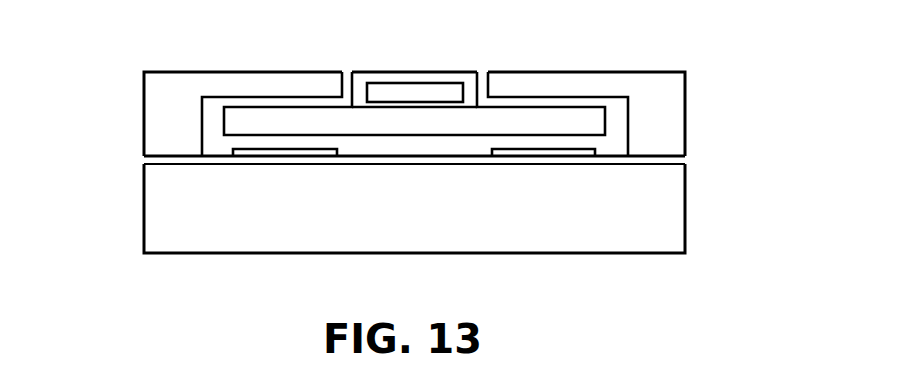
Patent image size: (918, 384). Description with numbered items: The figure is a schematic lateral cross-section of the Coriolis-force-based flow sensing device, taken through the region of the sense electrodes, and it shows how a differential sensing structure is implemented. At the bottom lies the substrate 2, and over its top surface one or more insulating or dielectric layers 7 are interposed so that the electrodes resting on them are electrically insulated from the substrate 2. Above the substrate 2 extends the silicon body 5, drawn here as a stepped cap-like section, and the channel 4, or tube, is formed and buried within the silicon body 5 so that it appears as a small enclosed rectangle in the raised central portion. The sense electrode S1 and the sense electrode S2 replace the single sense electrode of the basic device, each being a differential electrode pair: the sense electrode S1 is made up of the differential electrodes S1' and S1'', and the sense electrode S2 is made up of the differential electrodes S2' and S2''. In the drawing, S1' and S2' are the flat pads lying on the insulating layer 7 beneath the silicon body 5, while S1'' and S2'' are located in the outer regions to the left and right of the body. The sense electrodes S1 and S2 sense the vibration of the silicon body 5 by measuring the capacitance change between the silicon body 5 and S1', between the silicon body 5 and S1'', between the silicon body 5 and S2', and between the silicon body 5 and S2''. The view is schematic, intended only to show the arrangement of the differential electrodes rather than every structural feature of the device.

The substrate 2 is at (672, 183).
The insulating layer 7 is at (150, 157).
The channel 4 is at (449, 92).
The silicon body 5 is at (580, 120).
The sense electrode S1 is at (245, 114).
The sense electrode S2 is at (585, 114).
The differential electrode S1' is at (191, 199).
The differential electrode S2' is at (628, 200).
The differential electrode S1'' is at (196, 102).
The differential electrode S2'' is at (567, 102).